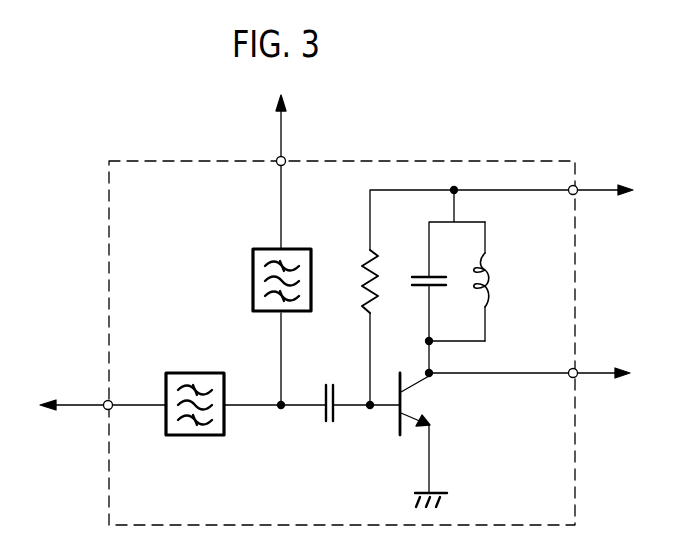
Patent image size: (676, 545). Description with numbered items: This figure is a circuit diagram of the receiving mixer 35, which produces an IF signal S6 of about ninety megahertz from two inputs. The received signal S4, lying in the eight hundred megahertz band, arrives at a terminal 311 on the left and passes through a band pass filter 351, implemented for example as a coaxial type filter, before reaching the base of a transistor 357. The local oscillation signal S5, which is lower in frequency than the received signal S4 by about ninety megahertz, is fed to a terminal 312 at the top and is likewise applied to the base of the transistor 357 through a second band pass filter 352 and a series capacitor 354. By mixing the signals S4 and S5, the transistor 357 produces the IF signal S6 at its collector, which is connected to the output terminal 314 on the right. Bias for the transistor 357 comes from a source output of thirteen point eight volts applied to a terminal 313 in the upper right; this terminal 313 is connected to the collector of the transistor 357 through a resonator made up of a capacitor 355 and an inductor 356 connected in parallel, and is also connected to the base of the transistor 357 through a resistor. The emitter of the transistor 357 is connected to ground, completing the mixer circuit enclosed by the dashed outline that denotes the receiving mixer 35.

The receiving mixer 35 is at (356, 160).
The terminal 311 is at (107, 410).
The terminal 312 is at (277, 158).
The terminal 313 is at (577, 188).
The terminal 314 is at (576, 370).
The band pass filter 351 is at (196, 373).
The band pass filter 352 is at (305, 249).
The capacitor 354 is at (322, 413).
The capacitor 355 is at (410, 280).
The inductor 356 is at (488, 285).
The transistor 357 is at (411, 398).
The received signal S4 is at (134, 410).
The local oscillation signal S5 is at (280, 207).
The IF signal S6 is at (532, 372).